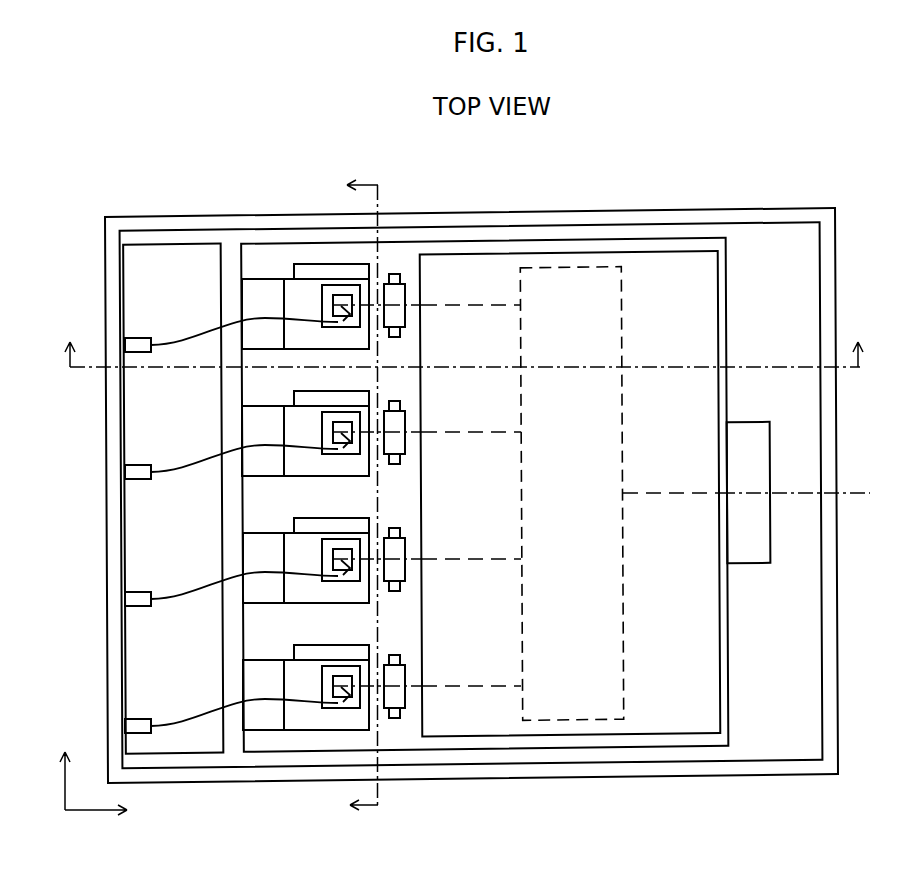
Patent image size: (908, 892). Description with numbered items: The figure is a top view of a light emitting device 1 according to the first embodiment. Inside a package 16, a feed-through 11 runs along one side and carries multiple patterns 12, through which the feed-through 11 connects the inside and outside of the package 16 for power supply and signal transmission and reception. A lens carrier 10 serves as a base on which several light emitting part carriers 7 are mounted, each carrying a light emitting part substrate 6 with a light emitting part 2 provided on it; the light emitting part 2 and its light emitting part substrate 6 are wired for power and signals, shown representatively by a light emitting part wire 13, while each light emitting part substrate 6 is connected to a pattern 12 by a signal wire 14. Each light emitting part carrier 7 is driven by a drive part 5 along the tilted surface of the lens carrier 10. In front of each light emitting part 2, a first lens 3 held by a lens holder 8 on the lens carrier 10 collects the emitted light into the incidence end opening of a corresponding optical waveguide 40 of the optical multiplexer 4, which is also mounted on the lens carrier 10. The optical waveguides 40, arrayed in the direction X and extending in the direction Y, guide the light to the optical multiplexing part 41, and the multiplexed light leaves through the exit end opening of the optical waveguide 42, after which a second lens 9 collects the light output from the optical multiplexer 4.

The light emitting device 1 is at (682, 165).
The light emitting part 2 is at (343, 298).
The first lens 3 is at (405, 313).
The optical multiplexer 4 is at (720, 290).
The drive part 5 is at (343, 265).
The light emitting part substrate 6 is at (286, 439).
The light emitting part carrier 7 is at (323, 290).
The lens holder 8 is at (400, 338).
The second lens 9 is at (750, 422).
The lens carrier 10 is at (437, 240).
The feed-through 11 is at (193, 242).
The pattern 12 is at (137, 337).
The light emitting part wire 13 is at (348, 317).
The signal wire 14 is at (212, 335).
The package 16 is at (837, 240).
The optical waveguide 40 is at (458, 305).
The optical multiplexing part 41 is at (621, 330).
The optical waveguide 42 is at (657, 492).